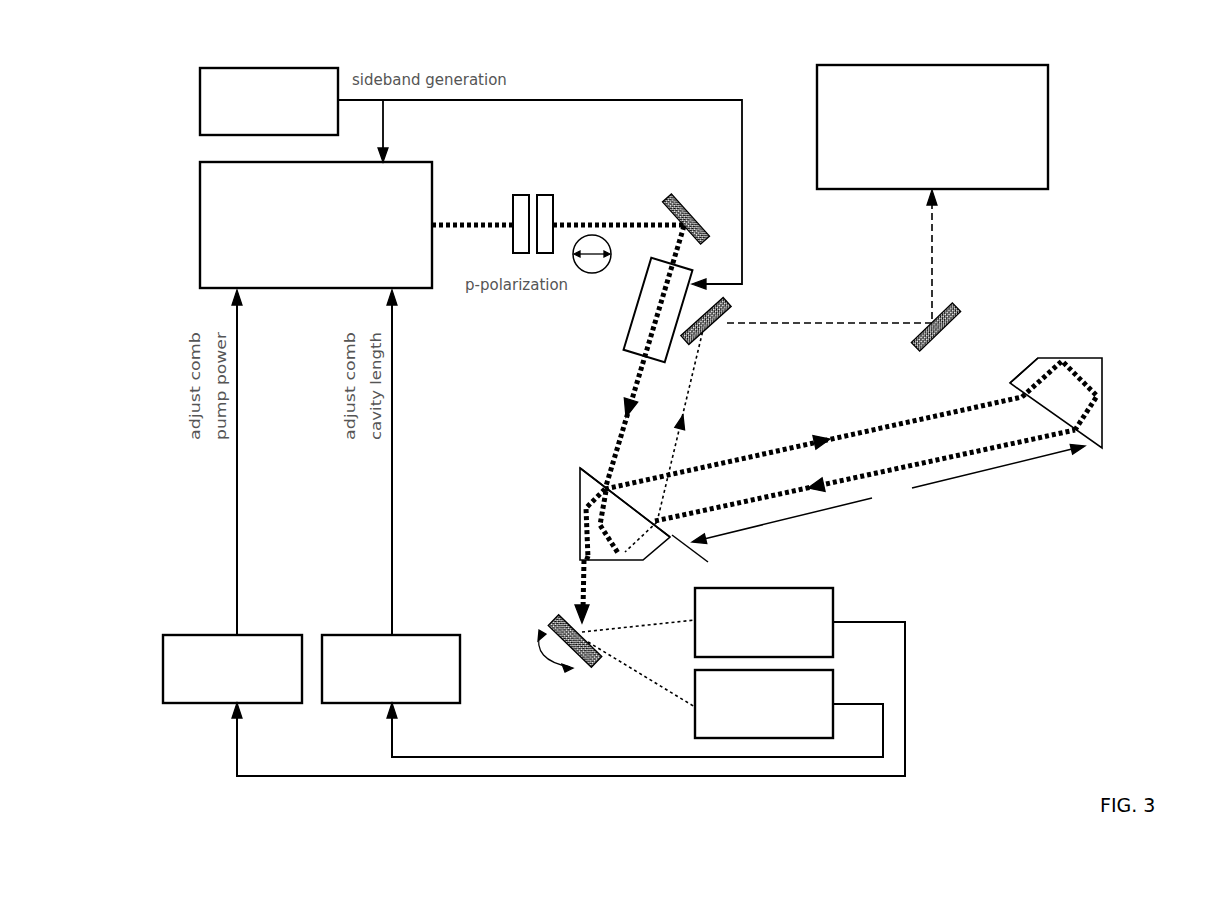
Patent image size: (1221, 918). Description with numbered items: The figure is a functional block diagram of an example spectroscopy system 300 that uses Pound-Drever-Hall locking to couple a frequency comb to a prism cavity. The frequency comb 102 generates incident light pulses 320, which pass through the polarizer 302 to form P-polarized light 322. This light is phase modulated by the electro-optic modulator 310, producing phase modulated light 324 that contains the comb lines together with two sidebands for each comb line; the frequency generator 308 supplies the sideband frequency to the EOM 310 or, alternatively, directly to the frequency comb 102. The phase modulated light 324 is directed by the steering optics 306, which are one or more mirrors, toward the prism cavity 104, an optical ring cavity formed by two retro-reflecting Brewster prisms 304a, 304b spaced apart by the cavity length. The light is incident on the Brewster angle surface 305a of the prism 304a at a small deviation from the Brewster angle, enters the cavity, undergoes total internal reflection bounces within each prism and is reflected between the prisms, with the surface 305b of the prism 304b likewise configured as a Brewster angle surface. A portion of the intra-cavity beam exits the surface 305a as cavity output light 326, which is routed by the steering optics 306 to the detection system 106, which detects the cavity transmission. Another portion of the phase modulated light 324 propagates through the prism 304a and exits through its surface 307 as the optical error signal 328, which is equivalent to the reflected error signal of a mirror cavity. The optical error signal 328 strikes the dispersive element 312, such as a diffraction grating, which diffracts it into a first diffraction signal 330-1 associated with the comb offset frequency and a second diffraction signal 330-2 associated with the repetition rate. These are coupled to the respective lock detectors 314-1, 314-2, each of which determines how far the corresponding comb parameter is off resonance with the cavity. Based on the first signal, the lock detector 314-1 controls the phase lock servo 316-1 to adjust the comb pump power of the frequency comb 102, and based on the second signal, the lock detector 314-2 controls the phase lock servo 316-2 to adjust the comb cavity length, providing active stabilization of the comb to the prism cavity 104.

The system 300 is at (686, 28).
The frequency generator 308 is at (270, 68).
The frequency comb 102 is at (302, 278).
The incident light pulses 320 is at (465, 222).
The polarizer 302 is at (533, 185).
The P-polarized light 322 is at (617, 223).
The steering optics 306 is at (910, 308).
The detection system 106 is at (919, 178).
The electro-optic modulator (EOM) 310 is at (631, 318).
The cavity output light 326 is at (690, 390).
The phase modulated light 324 is at (618, 432).
The surface of prism 304a 305a is at (598, 480).
The retro-reflecting Brewster prism 304a is at (580, 505).
The optical error signal 328 is at (585, 570).
The surface of prism 304a 307 is at (602, 558).
The first diffraction signal 330-1 is at (643, 627).
The second diffraction signal 330-2 is at (643, 670).
The dispersive element 312 is at (590, 663).
The lock detector 314-1 is at (833, 595).
The lock detector 314-2 is at (833, 683).
The phase lock servo 316-1 is at (278, 633).
The phase lock servo 316-2 is at (422, 633).
The surface of prism 304b 305b is at (1028, 400).
The retro-reflecting Brewster prism 304b is at (1102, 410).
The prism cavity 104 is at (1050, 512).